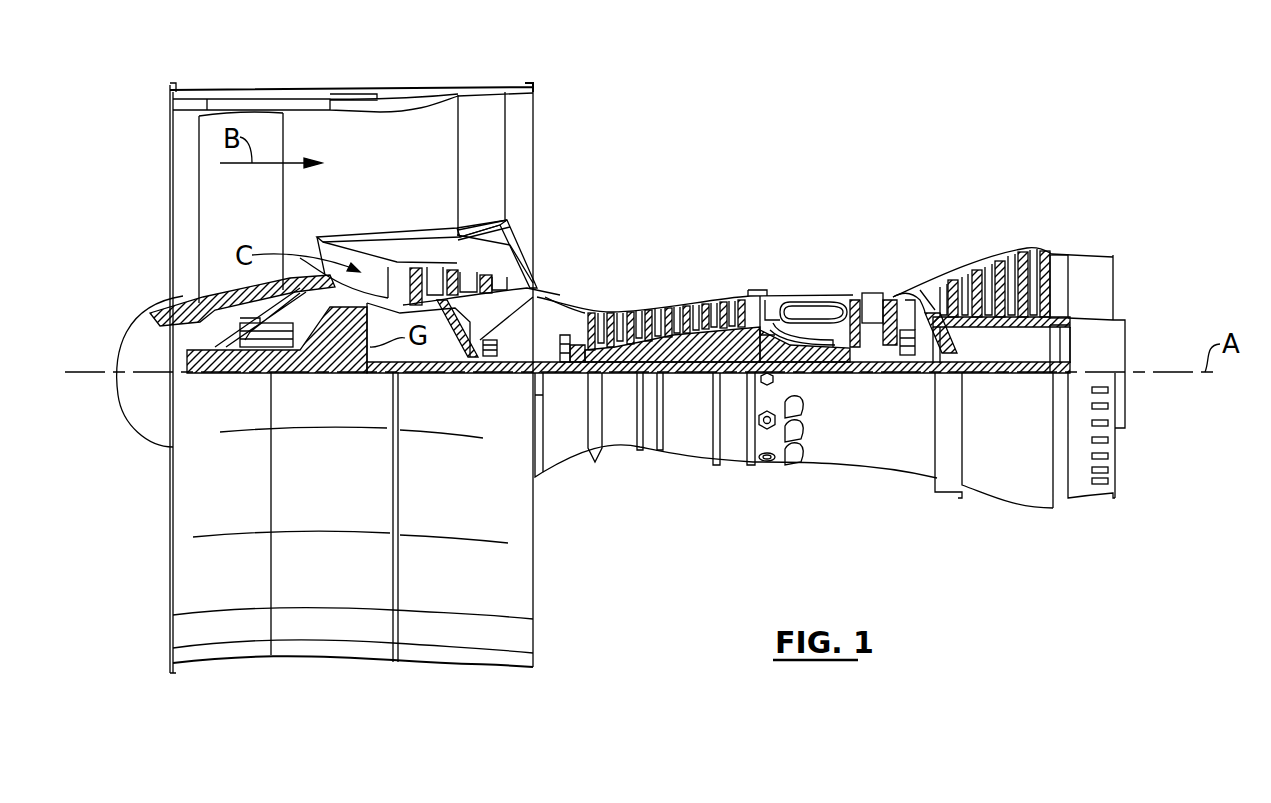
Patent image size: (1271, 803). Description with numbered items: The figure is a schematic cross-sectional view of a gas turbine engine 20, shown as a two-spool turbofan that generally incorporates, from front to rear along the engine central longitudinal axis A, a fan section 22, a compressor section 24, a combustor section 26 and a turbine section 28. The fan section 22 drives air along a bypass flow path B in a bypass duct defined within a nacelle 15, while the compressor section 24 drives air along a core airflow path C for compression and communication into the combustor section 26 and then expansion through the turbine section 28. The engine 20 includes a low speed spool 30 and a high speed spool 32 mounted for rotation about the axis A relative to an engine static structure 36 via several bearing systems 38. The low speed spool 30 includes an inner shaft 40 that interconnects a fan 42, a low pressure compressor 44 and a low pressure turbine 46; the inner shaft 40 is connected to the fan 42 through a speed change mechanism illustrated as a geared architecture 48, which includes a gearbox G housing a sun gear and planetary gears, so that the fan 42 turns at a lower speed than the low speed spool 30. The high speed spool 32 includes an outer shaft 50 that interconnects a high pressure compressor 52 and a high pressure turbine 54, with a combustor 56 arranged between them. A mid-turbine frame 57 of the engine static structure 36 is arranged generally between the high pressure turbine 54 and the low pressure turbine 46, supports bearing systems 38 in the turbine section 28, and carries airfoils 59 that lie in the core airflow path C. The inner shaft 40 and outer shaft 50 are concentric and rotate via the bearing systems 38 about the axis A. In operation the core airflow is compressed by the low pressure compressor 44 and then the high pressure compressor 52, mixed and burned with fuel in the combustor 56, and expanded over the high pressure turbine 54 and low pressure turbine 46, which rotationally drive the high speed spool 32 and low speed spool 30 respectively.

The nacelle 15 is at (355, 95).
The gas turbine engine 20 is at (818, 136).
The fan section 22 is at (279, 76).
The compressor section 24 is at (591, 277).
The combustor section 26 is at (808, 266).
The turbine section 28 is at (959, 224).
The low speed spool 30 is at (693, 388).
The high speed spool 32 is at (737, 330).
The engine static structure 36 is at (732, 477).
The bearing systems 38 is at (490, 357).
The inner shaft 40 is at (553, 373).
The fan 42 is at (256, 217).
The low pressure compressor 44 is at (447, 283).
The low pressure turbine 46 is at (998, 255).
The geared architecture 48 is at (360, 357).
The outer shaft 50 is at (818, 355).
The high pressure compressor 52 is at (667, 345).
The high pressure turbine 54 is at (873, 300).
The combustor 56 is at (808, 318).
The mid-turbine frame 57 is at (919, 281).
The airfoils 59 is at (943, 350).